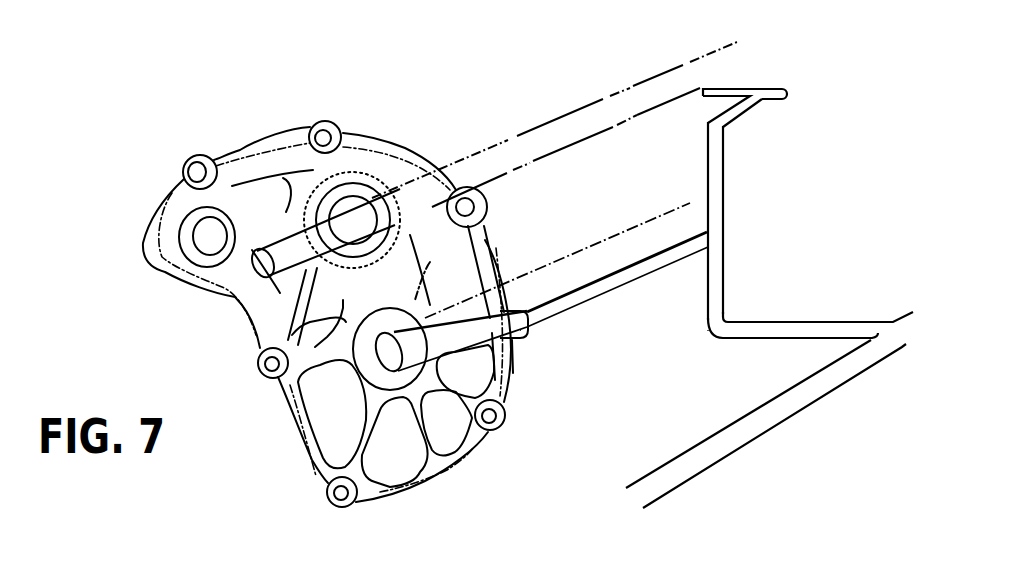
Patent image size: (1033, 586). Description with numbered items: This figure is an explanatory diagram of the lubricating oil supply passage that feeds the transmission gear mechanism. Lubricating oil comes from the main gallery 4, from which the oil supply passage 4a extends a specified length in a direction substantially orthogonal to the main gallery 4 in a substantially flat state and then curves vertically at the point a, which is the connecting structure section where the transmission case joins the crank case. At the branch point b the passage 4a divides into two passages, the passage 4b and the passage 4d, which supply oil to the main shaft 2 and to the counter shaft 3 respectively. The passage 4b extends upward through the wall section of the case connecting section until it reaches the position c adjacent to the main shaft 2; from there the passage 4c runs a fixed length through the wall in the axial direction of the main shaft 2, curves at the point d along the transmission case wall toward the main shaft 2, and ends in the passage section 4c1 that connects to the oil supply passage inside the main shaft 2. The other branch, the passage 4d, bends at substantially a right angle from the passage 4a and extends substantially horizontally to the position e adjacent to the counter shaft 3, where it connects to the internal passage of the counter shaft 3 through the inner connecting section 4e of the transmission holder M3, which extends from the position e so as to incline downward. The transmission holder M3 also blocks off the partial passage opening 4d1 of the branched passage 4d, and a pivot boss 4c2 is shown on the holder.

The transmission holder M3 is at (268, 130).
The main shaft 2 is at (560, 140).
The counter shaft 3 is at (600, 247).
The main gallery 4 is at (642, 282).
The oil supply passage 4a is at (810, 308).
The passage 4b is at (734, 221).
The passage 4c is at (763, 108).
The passage section 4c1 is at (748, 92).
The pivot boss 4c2 is at (495, 207).
The oil supply passage 4d is at (604, 285).
The partial passage opening 4d1 is at (515, 308).
The inner connecting section 4e is at (452, 318).
The point a is at (698, 326).
The branch point b is at (697, 224).
The position c is at (695, 125).
The point d is at (803, 97).
The position e is at (536, 332).